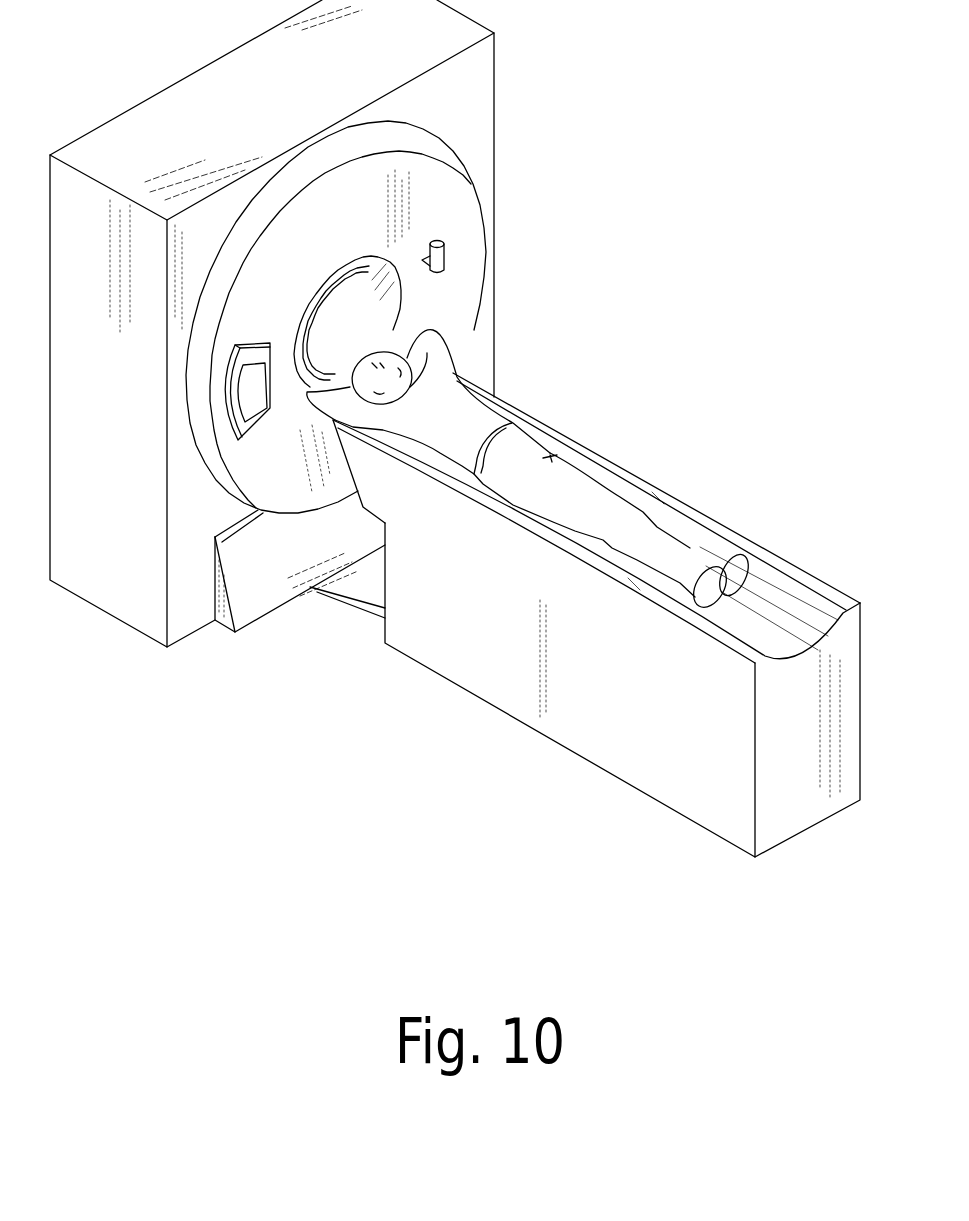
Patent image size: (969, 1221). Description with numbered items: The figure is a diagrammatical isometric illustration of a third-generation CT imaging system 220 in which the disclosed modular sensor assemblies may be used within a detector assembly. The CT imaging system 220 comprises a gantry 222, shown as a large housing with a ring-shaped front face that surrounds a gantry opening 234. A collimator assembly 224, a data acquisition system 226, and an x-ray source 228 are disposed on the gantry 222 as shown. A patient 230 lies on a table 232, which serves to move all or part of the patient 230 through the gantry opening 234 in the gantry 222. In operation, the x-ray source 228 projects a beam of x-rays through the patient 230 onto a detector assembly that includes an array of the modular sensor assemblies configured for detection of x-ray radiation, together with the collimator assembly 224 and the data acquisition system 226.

The CT imaging system 220 is at (650, 268).
The gantry 222 is at (461, 216).
The collimator assembly 224 is at (253, 423).
The data acquisition system 226 is at (250, 356).
The x-ray source 228 is at (445, 262).
The patient 230 is at (490, 418).
The table 232 is at (642, 770).
The gantry opening 234 is at (337, 315).